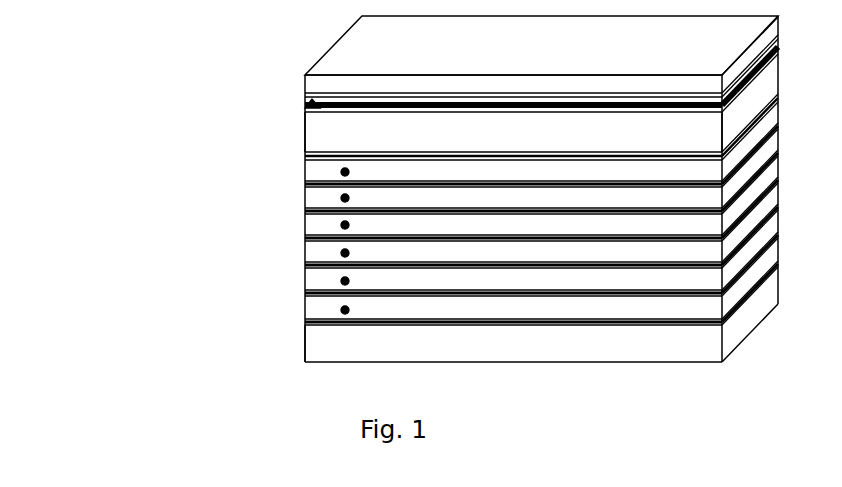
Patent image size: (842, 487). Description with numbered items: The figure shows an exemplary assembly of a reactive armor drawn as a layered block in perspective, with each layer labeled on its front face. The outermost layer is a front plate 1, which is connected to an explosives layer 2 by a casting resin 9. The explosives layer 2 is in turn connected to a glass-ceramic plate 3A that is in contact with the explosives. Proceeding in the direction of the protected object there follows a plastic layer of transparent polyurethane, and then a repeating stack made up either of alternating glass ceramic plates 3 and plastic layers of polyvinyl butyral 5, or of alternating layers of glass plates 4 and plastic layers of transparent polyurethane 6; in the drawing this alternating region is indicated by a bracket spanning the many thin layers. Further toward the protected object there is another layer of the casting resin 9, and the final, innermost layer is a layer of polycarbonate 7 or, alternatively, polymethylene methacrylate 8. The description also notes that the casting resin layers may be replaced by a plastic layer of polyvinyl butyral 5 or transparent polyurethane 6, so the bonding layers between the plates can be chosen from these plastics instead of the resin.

The front plate 1 is at (345, 83).
The explosives layer 2 is at (310, 106).
The glass-ceramic plate 3A is at (312, 128).
The glass ceramic plates 3 is at (389, 218).
The glass plates 4 is at (541, 209).
The plastic layers of polyvinyl butyral 5 is at (345, 172).
The plastic layers of transparent polyurethane 6 is at (345, 157).
The layer of polycarbonate 7 is at (405, 333).
The polymethylene methacrylate 8 is at (328, 345).
The casting resin 9 is at (305, 103).